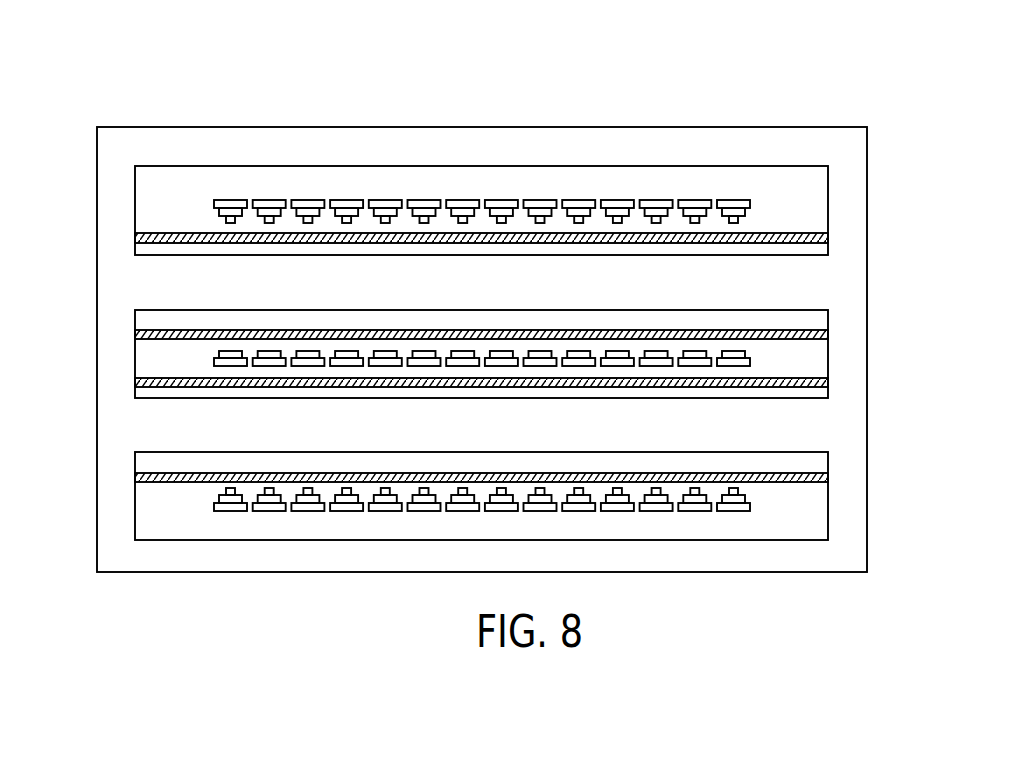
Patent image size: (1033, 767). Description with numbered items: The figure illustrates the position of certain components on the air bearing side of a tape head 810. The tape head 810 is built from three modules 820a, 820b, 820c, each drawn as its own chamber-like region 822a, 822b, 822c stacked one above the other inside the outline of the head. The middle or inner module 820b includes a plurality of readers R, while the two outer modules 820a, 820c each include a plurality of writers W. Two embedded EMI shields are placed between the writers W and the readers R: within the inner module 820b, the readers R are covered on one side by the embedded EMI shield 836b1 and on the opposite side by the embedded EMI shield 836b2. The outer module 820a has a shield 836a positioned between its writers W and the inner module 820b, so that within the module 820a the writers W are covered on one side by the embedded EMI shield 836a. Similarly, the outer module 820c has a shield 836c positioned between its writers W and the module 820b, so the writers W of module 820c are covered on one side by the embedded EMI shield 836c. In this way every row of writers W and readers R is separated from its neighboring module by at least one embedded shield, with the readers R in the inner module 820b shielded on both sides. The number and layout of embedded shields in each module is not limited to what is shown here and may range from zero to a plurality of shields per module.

The tape head 810 is at (549, 76).
The outer module 820a is at (120, 527).
The inner module 820b is at (120, 322).
The outer module 820c is at (120, 187).
The first processing chamber 822a is at (257, 541).
The second processing chamber 822b is at (135, 394).
The third processing chamber 822c is at (350, 165).
The EMI shield 836a is at (777, 482).
The EMI shield 836b1 is at (808, 386).
The EMI shield 836b2 is at (808, 331).
The EMI shield 836c is at (790, 233).
The writers W is at (695, 200).
The readers R is at (616, 351).